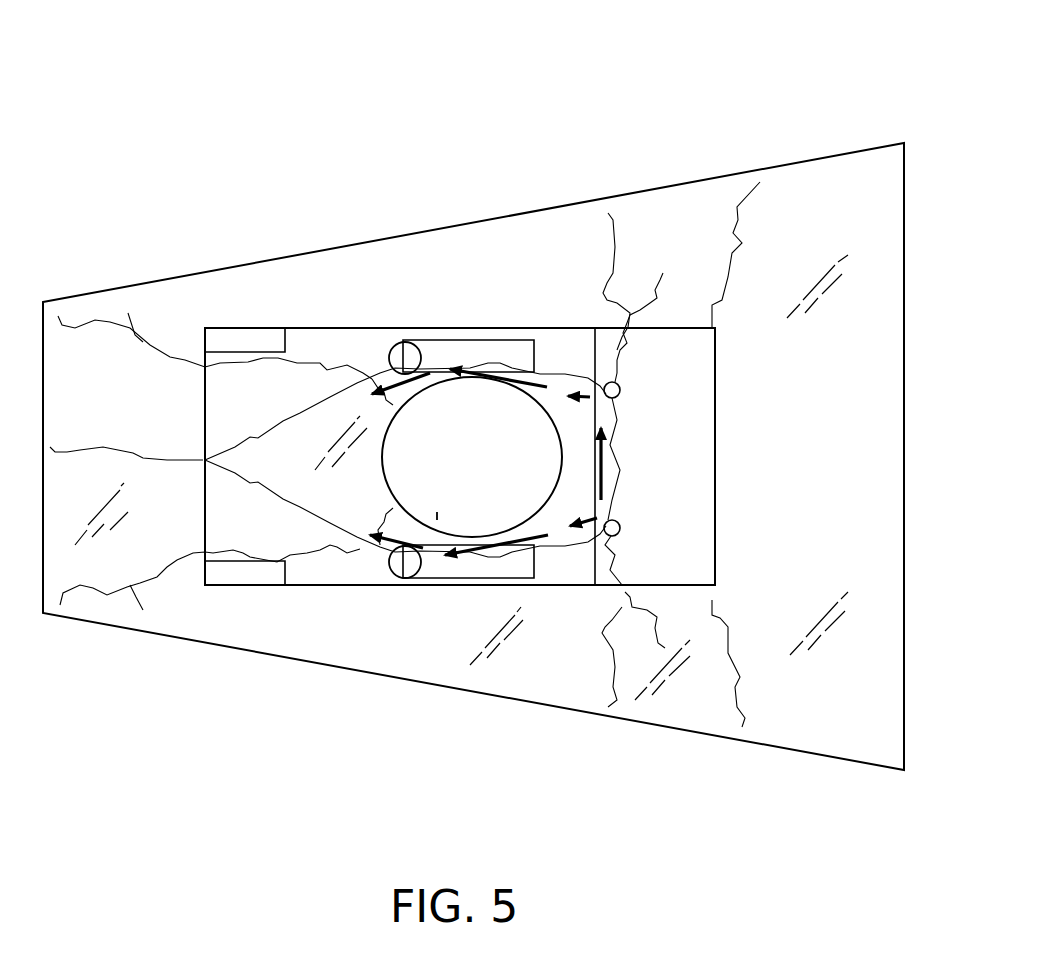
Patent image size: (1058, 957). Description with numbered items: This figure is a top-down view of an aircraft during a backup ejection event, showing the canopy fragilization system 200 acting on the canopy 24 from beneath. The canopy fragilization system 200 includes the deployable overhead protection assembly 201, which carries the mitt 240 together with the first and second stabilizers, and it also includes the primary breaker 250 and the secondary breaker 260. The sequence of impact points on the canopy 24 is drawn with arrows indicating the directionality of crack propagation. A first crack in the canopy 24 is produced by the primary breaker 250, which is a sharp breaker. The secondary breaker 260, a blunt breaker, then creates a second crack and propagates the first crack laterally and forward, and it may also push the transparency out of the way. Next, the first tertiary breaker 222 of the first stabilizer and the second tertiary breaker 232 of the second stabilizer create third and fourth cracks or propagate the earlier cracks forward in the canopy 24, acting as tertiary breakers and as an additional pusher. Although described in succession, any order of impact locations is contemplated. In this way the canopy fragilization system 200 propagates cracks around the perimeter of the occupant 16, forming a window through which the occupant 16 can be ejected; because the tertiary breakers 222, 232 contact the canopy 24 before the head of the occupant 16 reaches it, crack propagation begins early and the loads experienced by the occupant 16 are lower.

The canopy fragilization system 200 is at (748, 50).
The deployable overhead protection assembly 201 is at (565, 85).
The canopy 24 is at (670, 212).
The second tertiary breaker 232 is at (403, 350).
The first tertiary breaker 222 is at (395, 570).
The mitt 240 is at (445, 430).
The secondary breaker 260 is at (612, 384).
The primary breaker 250 is at (614, 536).
The occupant 16 is at (437, 512).